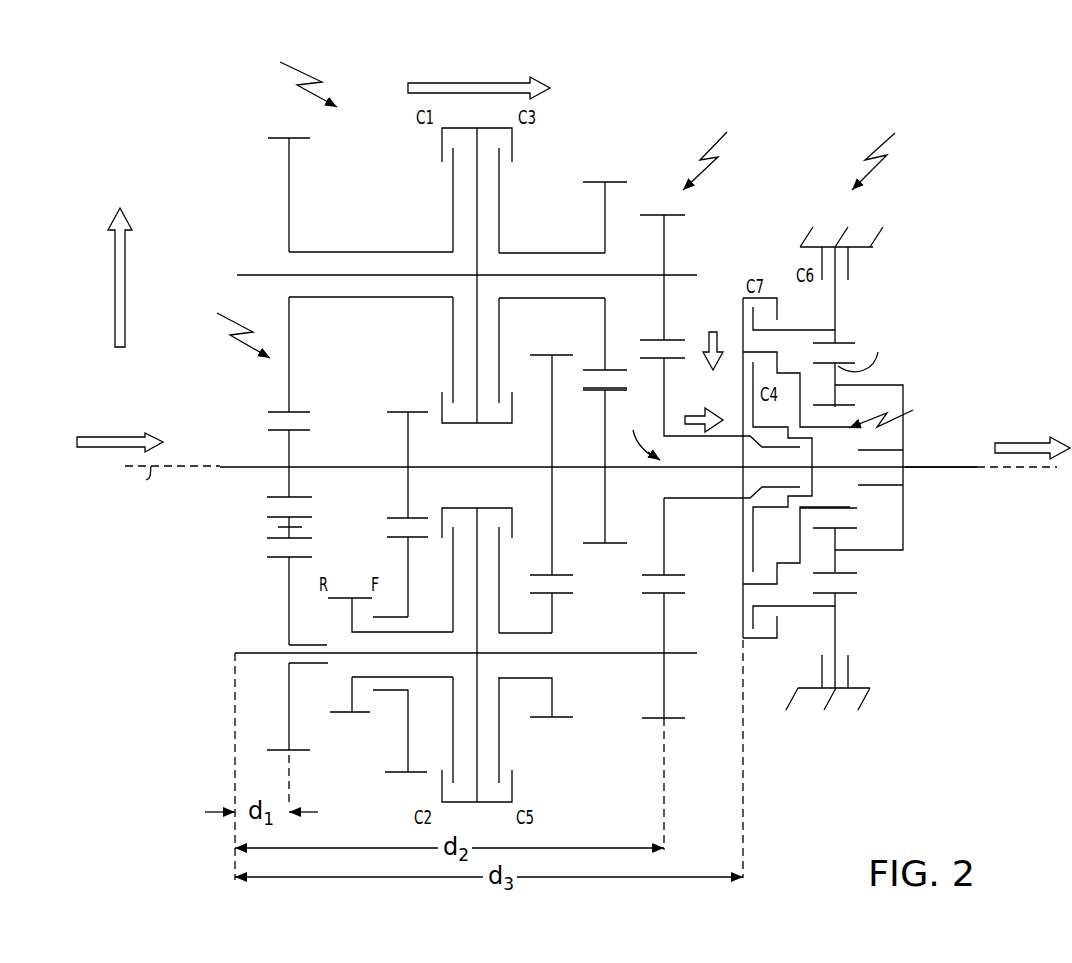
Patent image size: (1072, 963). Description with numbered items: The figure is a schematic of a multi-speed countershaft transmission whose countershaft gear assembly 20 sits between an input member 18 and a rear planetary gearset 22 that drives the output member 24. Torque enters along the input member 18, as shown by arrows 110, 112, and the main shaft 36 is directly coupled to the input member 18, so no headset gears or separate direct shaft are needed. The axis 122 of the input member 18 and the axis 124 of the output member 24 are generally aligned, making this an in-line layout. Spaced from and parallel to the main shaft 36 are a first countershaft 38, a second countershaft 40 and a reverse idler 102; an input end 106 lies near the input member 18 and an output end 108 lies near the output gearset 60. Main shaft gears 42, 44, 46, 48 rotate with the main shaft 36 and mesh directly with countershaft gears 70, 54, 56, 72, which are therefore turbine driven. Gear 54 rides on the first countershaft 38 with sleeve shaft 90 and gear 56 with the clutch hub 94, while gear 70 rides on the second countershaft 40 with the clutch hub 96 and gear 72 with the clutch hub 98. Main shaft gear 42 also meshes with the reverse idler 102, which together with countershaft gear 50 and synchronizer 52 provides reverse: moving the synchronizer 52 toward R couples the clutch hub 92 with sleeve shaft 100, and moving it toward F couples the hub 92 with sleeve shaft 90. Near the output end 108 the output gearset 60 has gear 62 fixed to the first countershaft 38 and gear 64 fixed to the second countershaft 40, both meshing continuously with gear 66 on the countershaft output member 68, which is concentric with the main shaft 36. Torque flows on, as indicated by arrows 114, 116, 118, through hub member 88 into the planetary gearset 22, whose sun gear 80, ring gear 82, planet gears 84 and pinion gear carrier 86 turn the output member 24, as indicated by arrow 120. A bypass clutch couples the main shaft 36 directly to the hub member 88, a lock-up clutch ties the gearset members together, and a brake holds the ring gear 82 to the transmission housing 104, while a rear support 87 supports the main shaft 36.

The input member 18 is at (254, 466).
The countershaft gear assembly 20 is at (286, 75).
The rear planetary gearset 22 is at (888, 148).
The output member 24 is at (946, 465).
The main shaft 36 is at (485, 465).
The first countershaft 38 is at (236, 652).
The second countershaft 40 is at (240, 274).
The main shaft gear 42 is at (293, 453).
The main shaft gear 44 is at (407, 425).
The main shaft gear 46 is at (548, 438).
The main shaft gear 48 is at (605, 450).
The countershaft gear 50 is at (291, 728).
The synchronizer 52 is at (350, 688).
The first countershaft gear 54 is at (402, 548).
The first countershaft gear 56 is at (553, 698).
The output gearset 60 is at (719, 149).
The gear 62 is at (665, 622).
The gear 64 is at (665, 240).
The gear 66 is at (665, 390).
The countershaft output member 68 is at (703, 498).
The second countershaft gear 70 is at (290, 197).
The second countershaft gear 72 is at (602, 210).
The sun gear 80 is at (901, 408).
The ring gear 82 is at (845, 338).
The planet gears 84 is at (867, 349).
The pinion gear carrier 86 is at (892, 384).
The rear support 87 is at (883, 486).
The hub member 88 is at (743, 307).
The sleeve shaft 90 is at (397, 693).
The C2 clutch hub 92 is at (435, 630).
The C5 clutch hub 94 is at (530, 634).
The C1 clutch hub 96 is at (373, 248).
The C3 clutch hub 98 is at (533, 248).
The sleeve shaft 100 is at (318, 630).
The reverse idler 102 is at (270, 527).
The transmission housing 104 is at (877, 237).
The input end 106 is at (311, 353).
The output end 108 is at (637, 432).
The arrow 110 is at (112, 437).
The arrow 112 is at (114, 297).
The arrow 114 is at (465, 82).
The arrow 116 is at (721, 328).
The arrow 118 is at (706, 433).
The arrow 120 is at (1030, 443).
The axis 122 is at (135, 488).
The axis 124 is at (1020, 469).